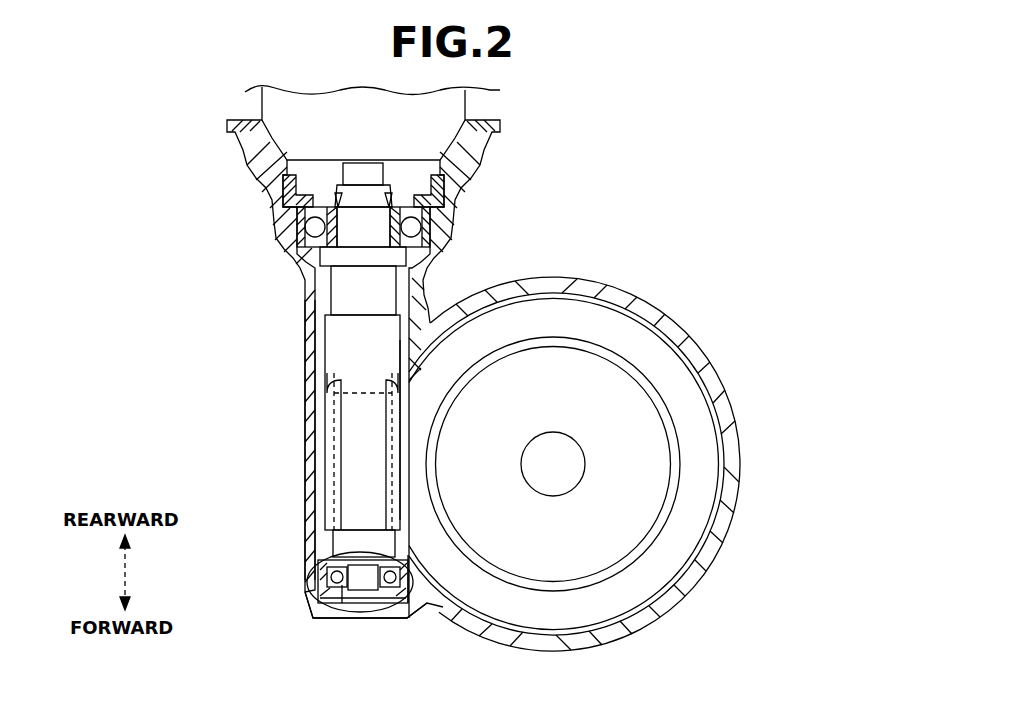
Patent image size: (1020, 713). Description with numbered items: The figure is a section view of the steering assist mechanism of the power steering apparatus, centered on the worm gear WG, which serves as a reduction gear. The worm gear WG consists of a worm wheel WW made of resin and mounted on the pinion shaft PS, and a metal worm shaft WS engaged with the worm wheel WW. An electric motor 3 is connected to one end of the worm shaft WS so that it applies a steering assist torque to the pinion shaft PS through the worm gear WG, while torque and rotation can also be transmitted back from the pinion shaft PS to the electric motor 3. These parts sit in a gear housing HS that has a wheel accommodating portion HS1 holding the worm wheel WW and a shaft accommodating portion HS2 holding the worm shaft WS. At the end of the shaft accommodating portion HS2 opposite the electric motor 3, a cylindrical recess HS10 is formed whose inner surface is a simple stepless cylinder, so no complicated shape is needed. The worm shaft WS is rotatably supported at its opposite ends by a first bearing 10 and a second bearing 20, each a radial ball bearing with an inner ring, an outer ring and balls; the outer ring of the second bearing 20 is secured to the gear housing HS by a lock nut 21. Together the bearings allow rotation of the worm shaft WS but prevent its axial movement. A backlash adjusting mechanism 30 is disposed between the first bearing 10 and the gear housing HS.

The electric motor 3 is at (457, 110).
The lock nut 21 is at (447, 194).
The second bearing 20 is at (437, 232).
The gear housing HS is at (305, 290).
The wheel accommodating portion HS1 is at (688, 349).
The shaft accommodating portion HS2 is at (306, 431).
The cylindrical recess HS10 is at (397, 604).
The worm shaft WS is at (338, 362).
The worm wheel WW is at (700, 490).
The pinion shaft PS is at (585, 481).
The worm gear WG is at (410, 528).
The backlash adjusting mechanism 30 is at (307, 597).
The first bearing 10 is at (357, 604).